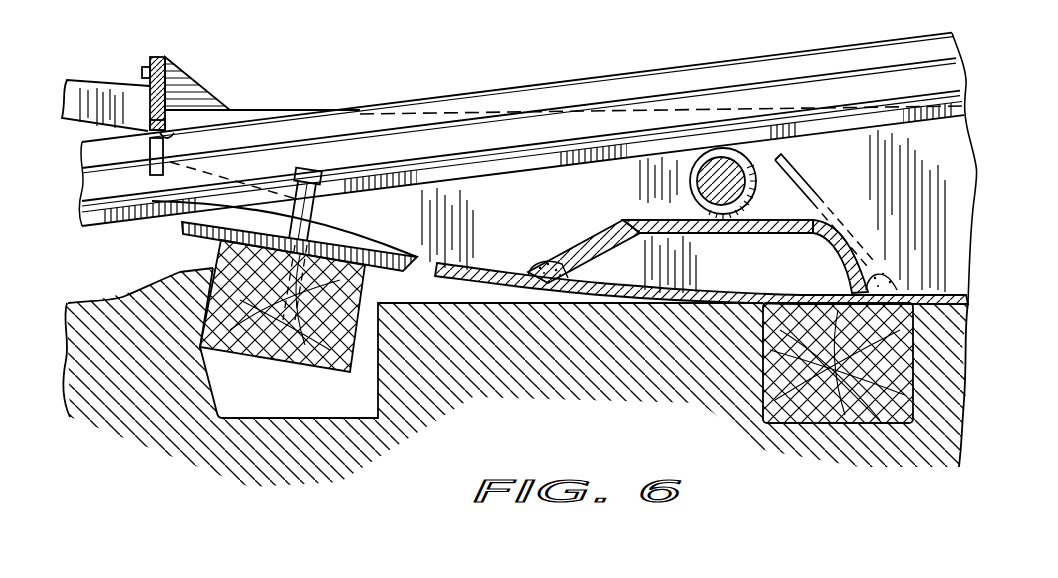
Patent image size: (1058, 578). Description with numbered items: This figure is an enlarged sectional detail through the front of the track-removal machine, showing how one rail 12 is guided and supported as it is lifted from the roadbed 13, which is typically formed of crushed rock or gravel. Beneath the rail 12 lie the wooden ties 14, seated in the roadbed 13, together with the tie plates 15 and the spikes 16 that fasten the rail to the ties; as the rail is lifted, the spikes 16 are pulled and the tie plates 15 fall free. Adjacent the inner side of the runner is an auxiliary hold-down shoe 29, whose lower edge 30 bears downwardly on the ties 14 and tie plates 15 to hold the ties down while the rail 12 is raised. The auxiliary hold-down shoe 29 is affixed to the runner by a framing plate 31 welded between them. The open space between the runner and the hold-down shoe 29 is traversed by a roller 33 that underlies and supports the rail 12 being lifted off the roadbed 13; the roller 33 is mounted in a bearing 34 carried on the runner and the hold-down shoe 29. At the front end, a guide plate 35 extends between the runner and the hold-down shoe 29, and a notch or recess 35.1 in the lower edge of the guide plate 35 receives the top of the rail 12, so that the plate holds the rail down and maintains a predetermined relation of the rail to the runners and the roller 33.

The railroad track rail 12 is at (610, 88).
The roadbed 13 is at (110, 298).
The wooden tie 14 is at (293, 362).
The tie plate 15 is at (213, 228).
The spike 16 is at (322, 207).
The auxiliary hold-down shoe 29 is at (497, 193).
The lower edge of auxiliary hold-down shoe 30 is at (433, 276).
The framing plate 31 is at (598, 255).
The roller 33 is at (690, 180).
The bearing 34 is at (748, 150).
The guide plate 35 is at (157, 56).
The notch or recess 35.1 is at (163, 134).